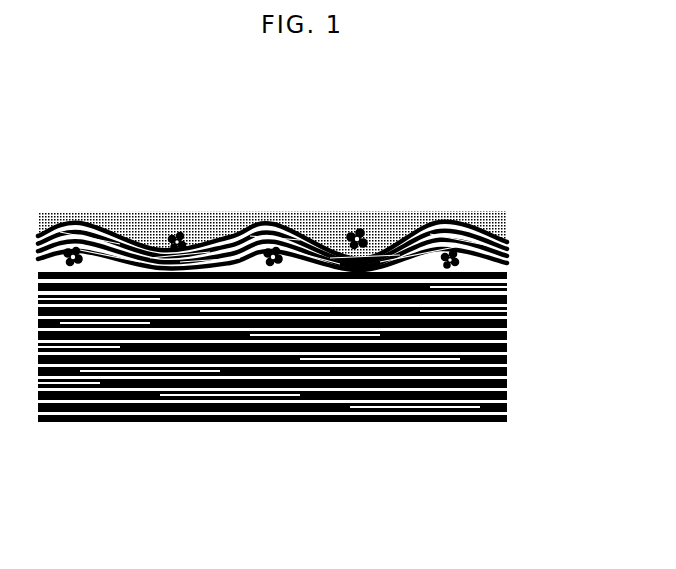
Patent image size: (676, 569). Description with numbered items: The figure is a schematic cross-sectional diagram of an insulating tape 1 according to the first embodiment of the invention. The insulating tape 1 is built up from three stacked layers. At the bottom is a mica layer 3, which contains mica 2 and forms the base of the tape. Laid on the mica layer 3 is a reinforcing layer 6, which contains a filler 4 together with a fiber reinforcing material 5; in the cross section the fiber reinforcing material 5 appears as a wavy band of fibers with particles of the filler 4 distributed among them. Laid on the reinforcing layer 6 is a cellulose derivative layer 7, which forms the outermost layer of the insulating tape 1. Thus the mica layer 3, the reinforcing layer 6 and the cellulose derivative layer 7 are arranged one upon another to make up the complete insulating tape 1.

The insulating tape 1 is at (485, 199).
The mica 2 is at (490, 427).
The mica layer 3 is at (516, 273).
The filler 4 is at (80, 228).
The fiber reinforcing material 5 is at (312, 232).
The reinforcing layer 6 is at (515, 240).
The cellulose derivative layer 7 is at (515, 222).